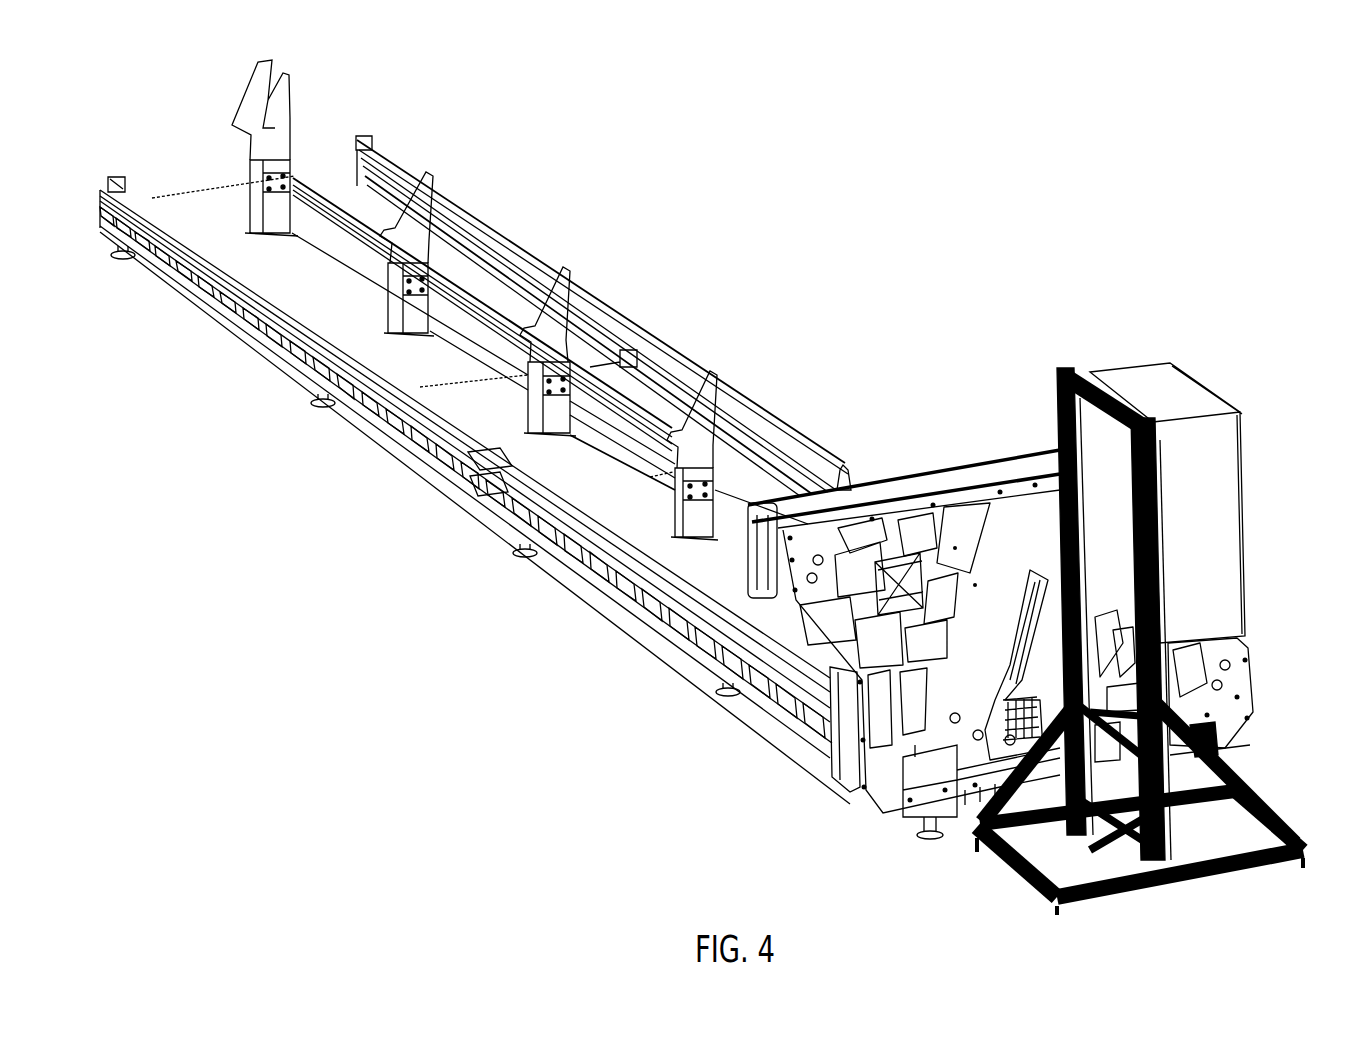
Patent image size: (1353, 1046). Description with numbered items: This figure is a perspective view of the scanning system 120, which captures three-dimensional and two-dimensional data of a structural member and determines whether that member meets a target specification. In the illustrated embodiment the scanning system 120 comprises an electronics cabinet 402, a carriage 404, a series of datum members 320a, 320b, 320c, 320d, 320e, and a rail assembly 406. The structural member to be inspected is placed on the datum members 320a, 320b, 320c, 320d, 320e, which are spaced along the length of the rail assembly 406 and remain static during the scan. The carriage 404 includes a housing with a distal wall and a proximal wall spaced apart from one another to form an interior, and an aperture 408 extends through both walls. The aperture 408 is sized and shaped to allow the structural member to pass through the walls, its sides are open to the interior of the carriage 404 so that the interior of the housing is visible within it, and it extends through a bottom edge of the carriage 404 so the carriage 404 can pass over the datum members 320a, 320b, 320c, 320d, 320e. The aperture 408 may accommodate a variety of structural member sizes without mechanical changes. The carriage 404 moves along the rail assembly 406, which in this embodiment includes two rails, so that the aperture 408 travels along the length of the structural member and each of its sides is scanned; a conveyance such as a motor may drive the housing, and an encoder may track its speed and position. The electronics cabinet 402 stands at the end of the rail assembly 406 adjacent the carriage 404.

The scanning system 120 is at (928, 152).
The datum member 320a is at (267, 145).
The datum member 320b is at (417, 253).
The datum member 320c is at (553, 350).
The datum member 320d is at (700, 452).
The datum member 320e is at (847, 480).
The electronics cabinet 402 is at (1148, 380).
The carriage 404 is at (802, 600).
The rail assembly 406 is at (425, 452).
The aperture 408 is at (1027, 570).